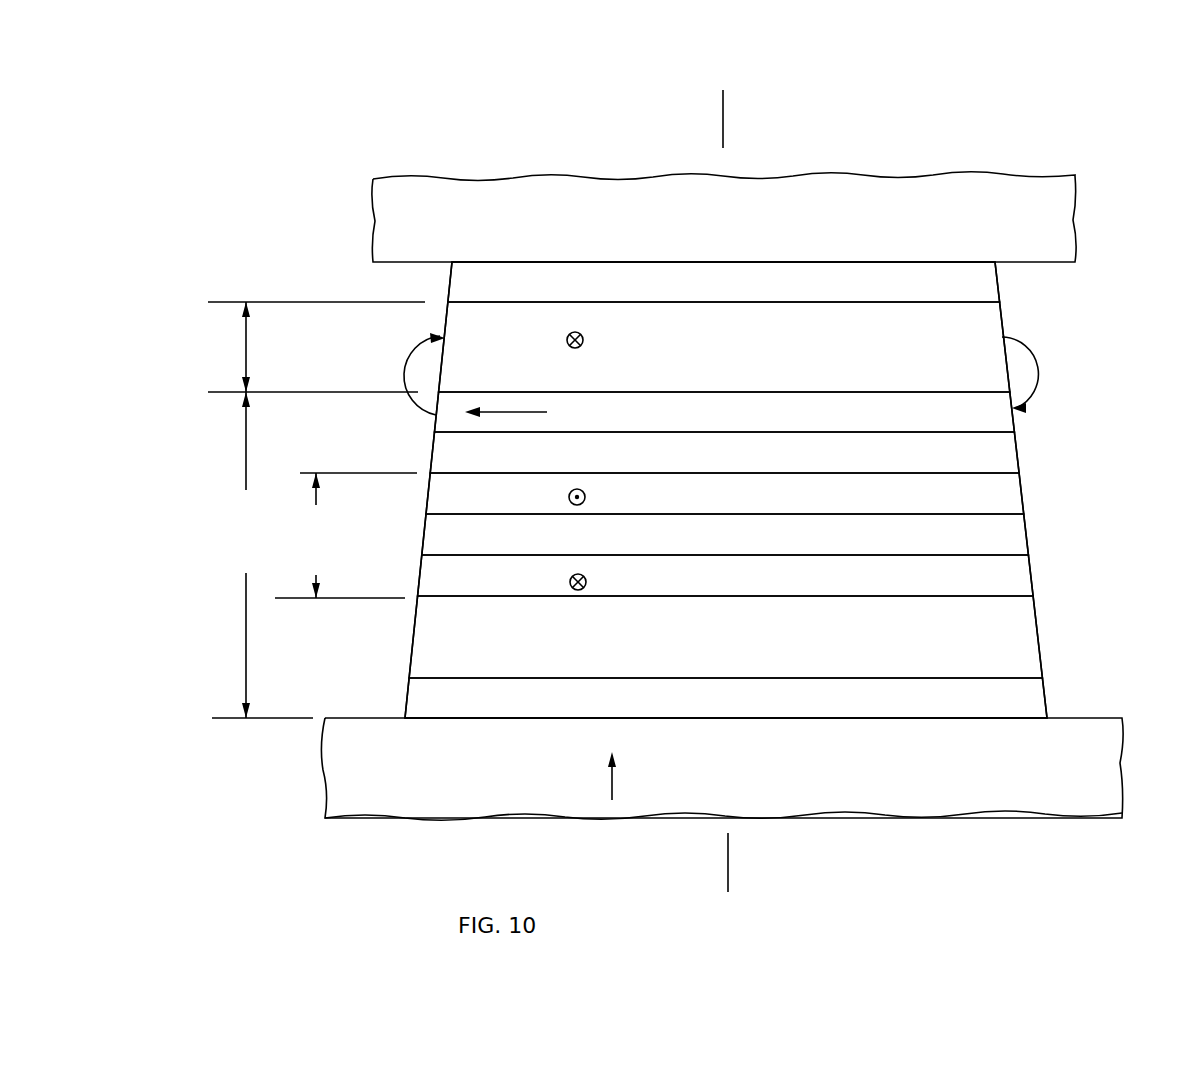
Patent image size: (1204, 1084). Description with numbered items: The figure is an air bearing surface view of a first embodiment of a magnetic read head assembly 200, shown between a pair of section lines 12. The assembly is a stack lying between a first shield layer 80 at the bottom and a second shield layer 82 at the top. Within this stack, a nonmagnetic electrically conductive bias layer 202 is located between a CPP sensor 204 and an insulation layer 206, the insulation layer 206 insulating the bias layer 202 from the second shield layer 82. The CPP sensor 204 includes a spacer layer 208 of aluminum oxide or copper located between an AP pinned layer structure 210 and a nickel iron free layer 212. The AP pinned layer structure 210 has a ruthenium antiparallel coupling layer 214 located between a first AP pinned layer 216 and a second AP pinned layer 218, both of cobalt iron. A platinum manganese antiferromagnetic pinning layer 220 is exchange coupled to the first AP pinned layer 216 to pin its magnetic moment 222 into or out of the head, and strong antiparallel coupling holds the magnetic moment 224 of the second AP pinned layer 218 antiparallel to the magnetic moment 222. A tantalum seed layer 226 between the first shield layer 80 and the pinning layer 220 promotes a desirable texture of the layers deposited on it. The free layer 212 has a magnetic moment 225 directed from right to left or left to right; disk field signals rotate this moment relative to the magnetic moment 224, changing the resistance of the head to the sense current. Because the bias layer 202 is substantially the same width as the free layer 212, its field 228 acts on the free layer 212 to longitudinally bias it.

The section line 12 is at (737, 104).
The first shield layer 80 is at (977, 783).
The second shield layer 82 is at (890, 227).
The magnetic read head assembly 200 is at (1010, 141).
The bias layer 202 is at (985, 322).
The CPP sensor 204 is at (257, 555).
The insulation layer 206 is at (980, 284).
The spacer layer 208 is at (1013, 449).
The AP pinned layer structure 210 is at (346, 535).
The free layer 212 is at (1002, 418).
The antiparallel coupling layer 214 is at (1017, 531).
The first AP pinned layer 216 is at (1025, 576).
The second AP pinned layer 218 is at (1015, 493).
The antiferromagnetic pinning layer 220 is at (1033, 628).
The magnetic moment of the first AP pinned layer 222 is at (569, 580).
The magnetic moment of the second AP pinned layer 224 is at (568, 497).
The magnetic moment of the free layer 225 is at (503, 413).
The seed layer 226 is at (1037, 694).
The field 228 is at (403, 347).